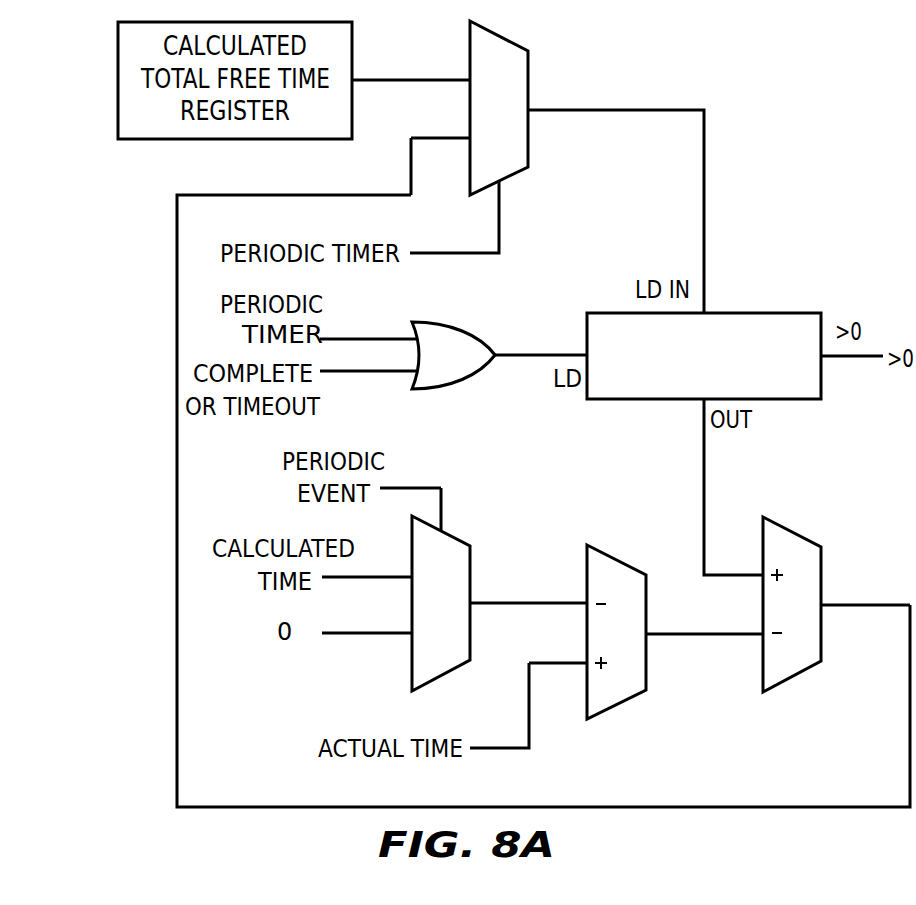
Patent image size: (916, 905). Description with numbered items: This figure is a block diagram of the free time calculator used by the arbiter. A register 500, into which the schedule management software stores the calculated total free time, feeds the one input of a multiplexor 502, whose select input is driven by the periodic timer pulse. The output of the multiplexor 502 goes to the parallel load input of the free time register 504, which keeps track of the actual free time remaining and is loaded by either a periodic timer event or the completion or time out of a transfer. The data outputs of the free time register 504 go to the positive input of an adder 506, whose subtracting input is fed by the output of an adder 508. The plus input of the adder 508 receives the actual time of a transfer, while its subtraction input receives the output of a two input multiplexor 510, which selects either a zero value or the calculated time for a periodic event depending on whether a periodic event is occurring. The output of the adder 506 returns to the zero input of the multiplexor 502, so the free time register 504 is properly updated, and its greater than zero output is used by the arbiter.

The register 500 is at (118, 62).
The multiplexor 502 is at (530, 80).
The free time register 504 is at (803, 312).
The adder 506 is at (802, 548).
The adder 508 is at (598, 713).
The two input multiplexor 510 is at (472, 556).